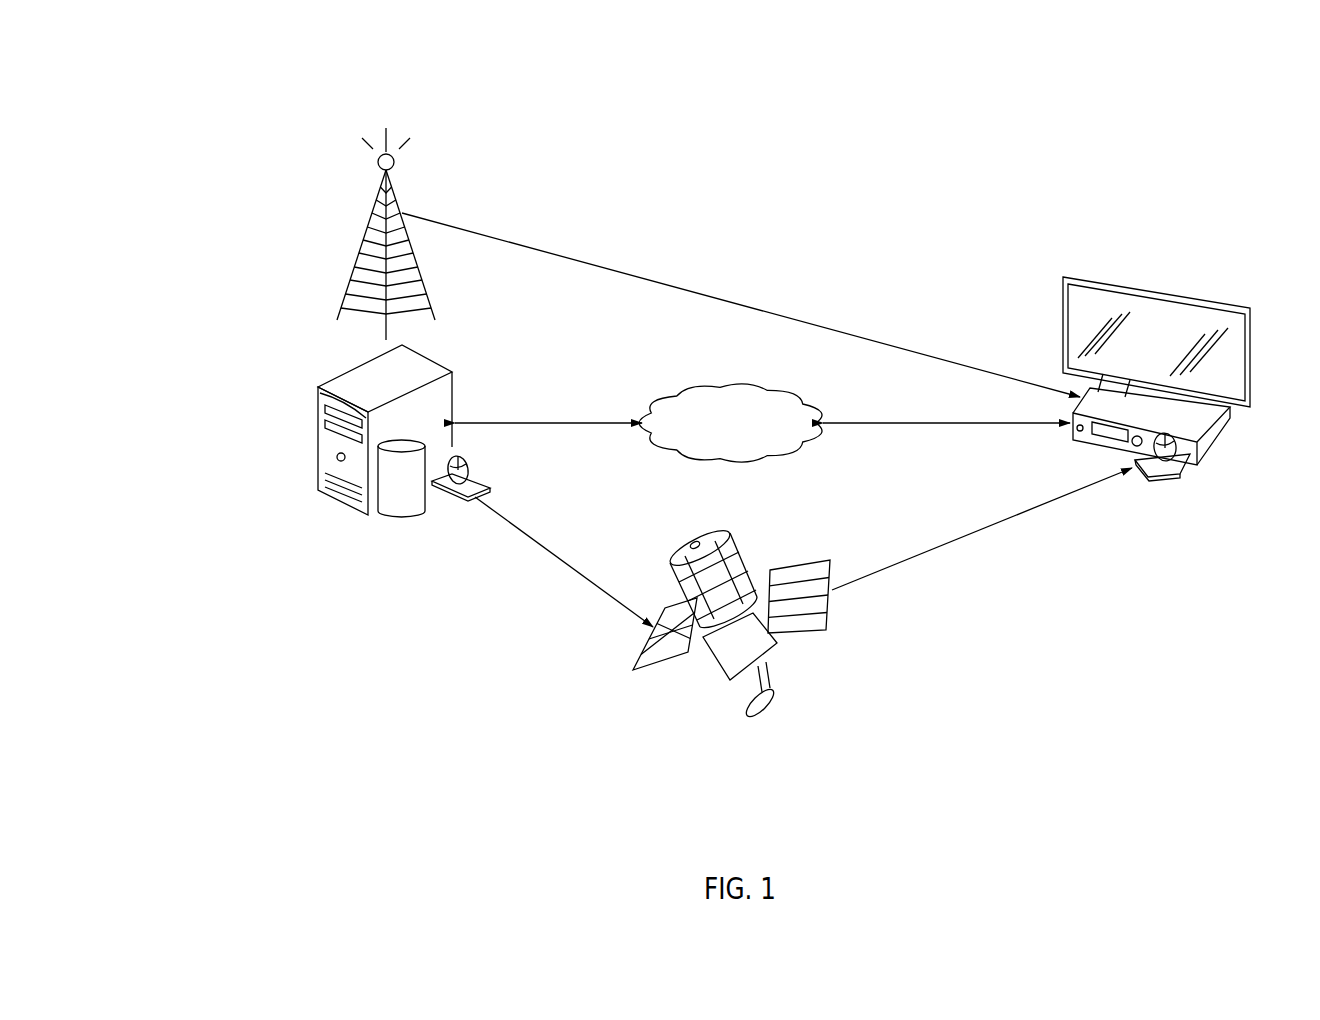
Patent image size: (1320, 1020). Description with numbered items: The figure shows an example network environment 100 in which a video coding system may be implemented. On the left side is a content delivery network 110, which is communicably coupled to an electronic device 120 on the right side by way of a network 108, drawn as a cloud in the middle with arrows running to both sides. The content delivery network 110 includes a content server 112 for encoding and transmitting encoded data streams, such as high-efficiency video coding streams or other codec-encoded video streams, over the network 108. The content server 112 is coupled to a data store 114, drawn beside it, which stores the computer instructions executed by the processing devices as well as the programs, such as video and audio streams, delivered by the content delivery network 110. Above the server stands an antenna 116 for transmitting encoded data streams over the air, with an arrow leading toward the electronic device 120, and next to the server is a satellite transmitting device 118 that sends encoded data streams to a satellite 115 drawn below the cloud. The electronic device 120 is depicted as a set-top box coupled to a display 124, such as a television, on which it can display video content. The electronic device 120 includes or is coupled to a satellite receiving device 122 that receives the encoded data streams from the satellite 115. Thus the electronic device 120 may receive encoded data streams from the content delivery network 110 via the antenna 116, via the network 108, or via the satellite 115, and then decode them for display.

The network environment 100 is at (1183, 126).
The network 108 is at (762, 456).
The content delivery network (CDN) 110 is at (250, 546).
The content server 112 is at (318, 428).
The data store 114 is at (408, 505).
The satellite 115 is at (778, 648).
The antenna 116 is at (360, 246).
The satellite transmitting device 118 is at (470, 474).
The electronic device 120 is at (1212, 432).
The satellite receiving device 122 is at (1153, 474).
The display 124 is at (1178, 296).